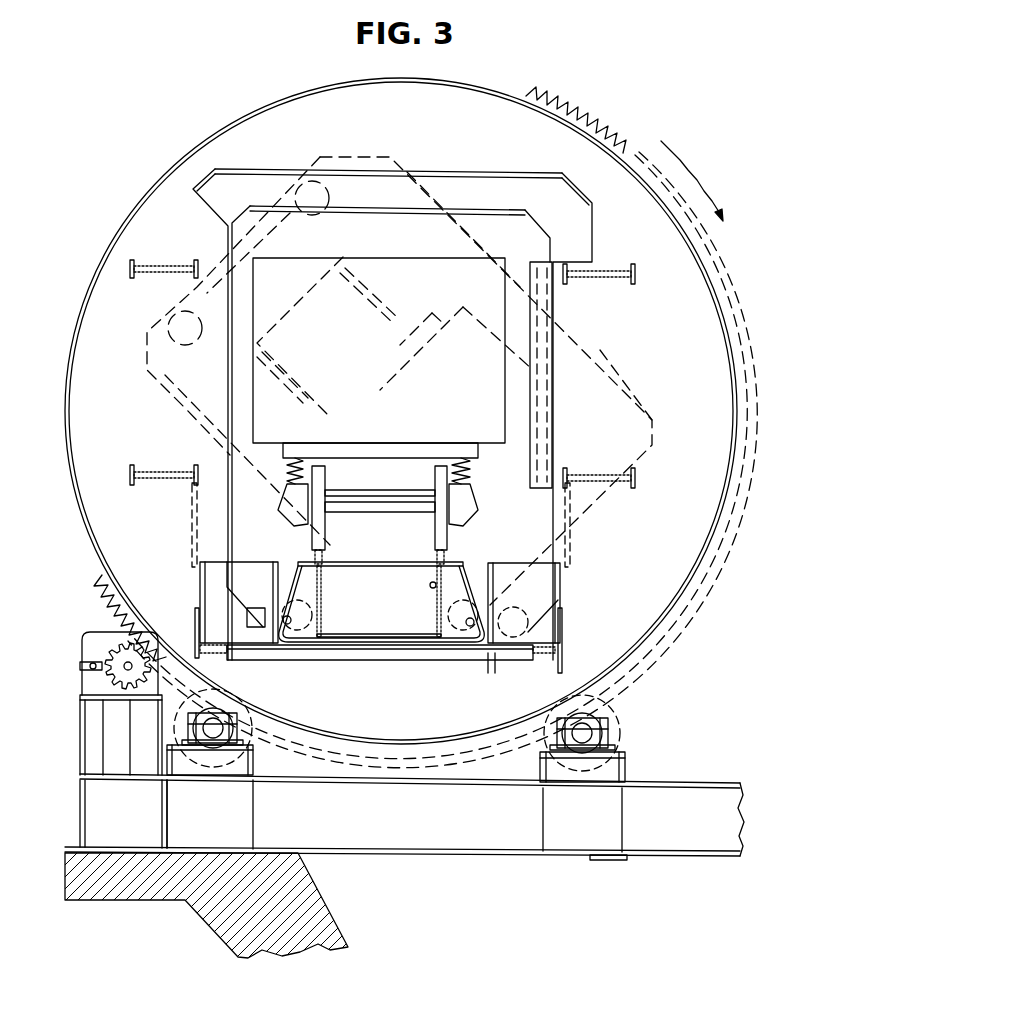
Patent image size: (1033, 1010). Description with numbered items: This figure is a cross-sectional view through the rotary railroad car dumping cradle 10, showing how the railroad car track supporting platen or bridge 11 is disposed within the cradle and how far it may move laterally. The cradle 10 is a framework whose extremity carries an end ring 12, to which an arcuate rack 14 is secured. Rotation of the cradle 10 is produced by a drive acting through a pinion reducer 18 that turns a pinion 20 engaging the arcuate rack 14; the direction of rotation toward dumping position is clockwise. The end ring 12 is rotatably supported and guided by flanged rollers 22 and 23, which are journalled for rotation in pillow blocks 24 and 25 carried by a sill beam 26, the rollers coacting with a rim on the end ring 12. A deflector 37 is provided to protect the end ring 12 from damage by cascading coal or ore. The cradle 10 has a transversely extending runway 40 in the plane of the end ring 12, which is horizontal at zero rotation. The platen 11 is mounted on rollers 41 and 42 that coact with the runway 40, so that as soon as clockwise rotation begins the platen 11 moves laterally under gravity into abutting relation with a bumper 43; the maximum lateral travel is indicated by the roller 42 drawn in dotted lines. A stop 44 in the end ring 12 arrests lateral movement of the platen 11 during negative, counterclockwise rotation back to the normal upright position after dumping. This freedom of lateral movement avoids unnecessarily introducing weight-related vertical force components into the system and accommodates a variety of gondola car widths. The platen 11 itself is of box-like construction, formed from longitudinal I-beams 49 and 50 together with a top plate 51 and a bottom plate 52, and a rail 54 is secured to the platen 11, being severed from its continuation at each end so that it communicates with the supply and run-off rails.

The rotary railroad car dumping cradle 10 is at (118, 295).
The platen or bridge 11 is at (362, 557).
The end ring 12 is at (697, 577).
The arcuate rack 14 is at (103, 590).
The pinion reducer 18 is at (90, 653).
The pinion 20 is at (118, 670).
The flanged roller 22 is at (242, 730).
The flanged roller 23 is at (611, 718).
The pillow block 24 is at (217, 723).
The pillow block 25 is at (593, 709).
The sill beam 26 is at (416, 853).
The deflector 37 is at (437, 182).
The runway 40 is at (367, 660).
The roller 41 is at (282, 603).
The roller 42 is at (470, 597).
The bumper 43 is at (541, 409).
The stop 44 is at (263, 607).
The longitudinal I-beam 49 is at (321, 597).
The longitudinal I-beam 50 is at (437, 597).
The top plate 51 is at (390, 567).
The bottom plate 52 is at (403, 636).
The rail 54 is at (438, 540).